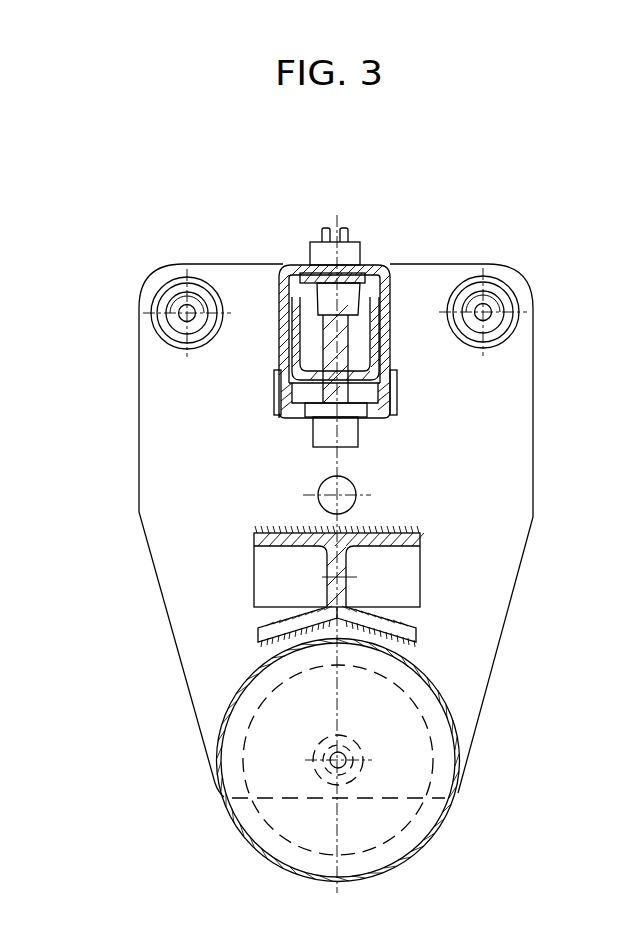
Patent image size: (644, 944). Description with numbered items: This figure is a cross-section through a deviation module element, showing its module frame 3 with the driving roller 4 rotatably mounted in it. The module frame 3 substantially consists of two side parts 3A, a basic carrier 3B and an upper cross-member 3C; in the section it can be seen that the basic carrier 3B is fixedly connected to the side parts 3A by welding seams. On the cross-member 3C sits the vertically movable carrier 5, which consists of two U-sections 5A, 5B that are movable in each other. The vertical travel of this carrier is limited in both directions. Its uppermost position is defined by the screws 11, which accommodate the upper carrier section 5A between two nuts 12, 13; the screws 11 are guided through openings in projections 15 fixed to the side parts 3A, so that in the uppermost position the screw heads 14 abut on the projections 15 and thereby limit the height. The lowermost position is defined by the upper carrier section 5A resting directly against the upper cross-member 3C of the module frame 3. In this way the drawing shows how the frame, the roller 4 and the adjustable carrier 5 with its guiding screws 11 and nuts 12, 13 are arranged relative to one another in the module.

The module frame 3 is at (173, 662).
The side parts 3A is at (485, 485).
The basic carrier 3B is at (420, 633).
The upper cross-member 3C is at (295, 335).
The driving roller 4 is at (258, 822).
The vertically movable carrier 5 is at (404, 403).
The upper U-section 5A is at (385, 358).
The lower U-section 5B is at (397, 383).
The screws 11 is at (340, 358).
The nut 12 is at (318, 290).
The nut 13 is at (290, 268).
The screw heads 14 is at (325, 433).
The projections 15 is at (315, 413).